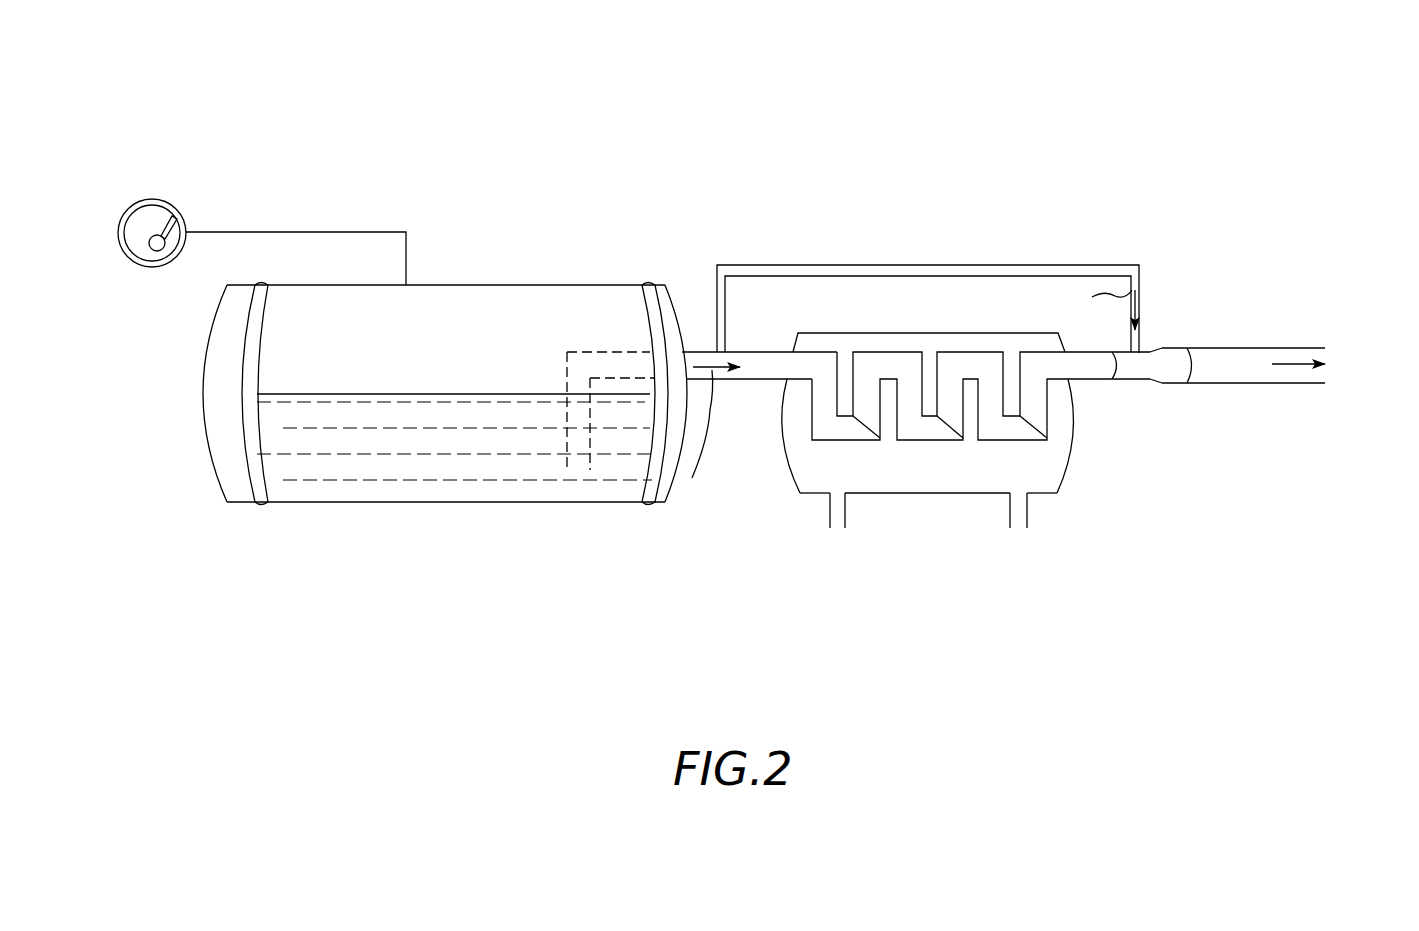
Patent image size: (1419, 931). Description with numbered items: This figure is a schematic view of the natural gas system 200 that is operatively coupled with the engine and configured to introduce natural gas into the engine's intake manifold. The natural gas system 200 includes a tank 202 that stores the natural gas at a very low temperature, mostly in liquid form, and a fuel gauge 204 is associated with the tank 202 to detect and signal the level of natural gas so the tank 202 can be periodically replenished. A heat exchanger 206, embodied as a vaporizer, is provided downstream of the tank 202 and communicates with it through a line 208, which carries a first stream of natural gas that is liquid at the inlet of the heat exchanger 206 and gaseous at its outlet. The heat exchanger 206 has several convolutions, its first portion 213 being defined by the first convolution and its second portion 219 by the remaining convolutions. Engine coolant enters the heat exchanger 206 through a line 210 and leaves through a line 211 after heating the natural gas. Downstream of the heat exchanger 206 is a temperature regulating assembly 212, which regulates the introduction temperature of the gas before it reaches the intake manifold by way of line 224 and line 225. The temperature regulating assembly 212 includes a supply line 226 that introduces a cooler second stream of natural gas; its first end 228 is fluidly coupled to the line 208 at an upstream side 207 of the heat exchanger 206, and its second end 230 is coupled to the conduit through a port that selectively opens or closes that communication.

The natural gas system 200 is at (338, 128).
The tank 202 is at (186, 474).
The fuel gauge 204 is at (157, 200).
The heat exchanger 206 is at (930, 494).
The upstream side 207 is at (732, 398).
The line 208 is at (694, 357).
The line 210 is at (850, 505).
The line 211 is at (1035, 512).
The temperature regulating assembly 212 is at (1162, 392).
The first portion 213 is at (827, 455).
The second portion 219 is at (950, 456).
The line 224 is at (1241, 365).
The line 225 is at (1335, 364).
The supply line 226 is at (767, 272).
The first end 228 is at (735, 346).
The second end 230 is at (1158, 336).